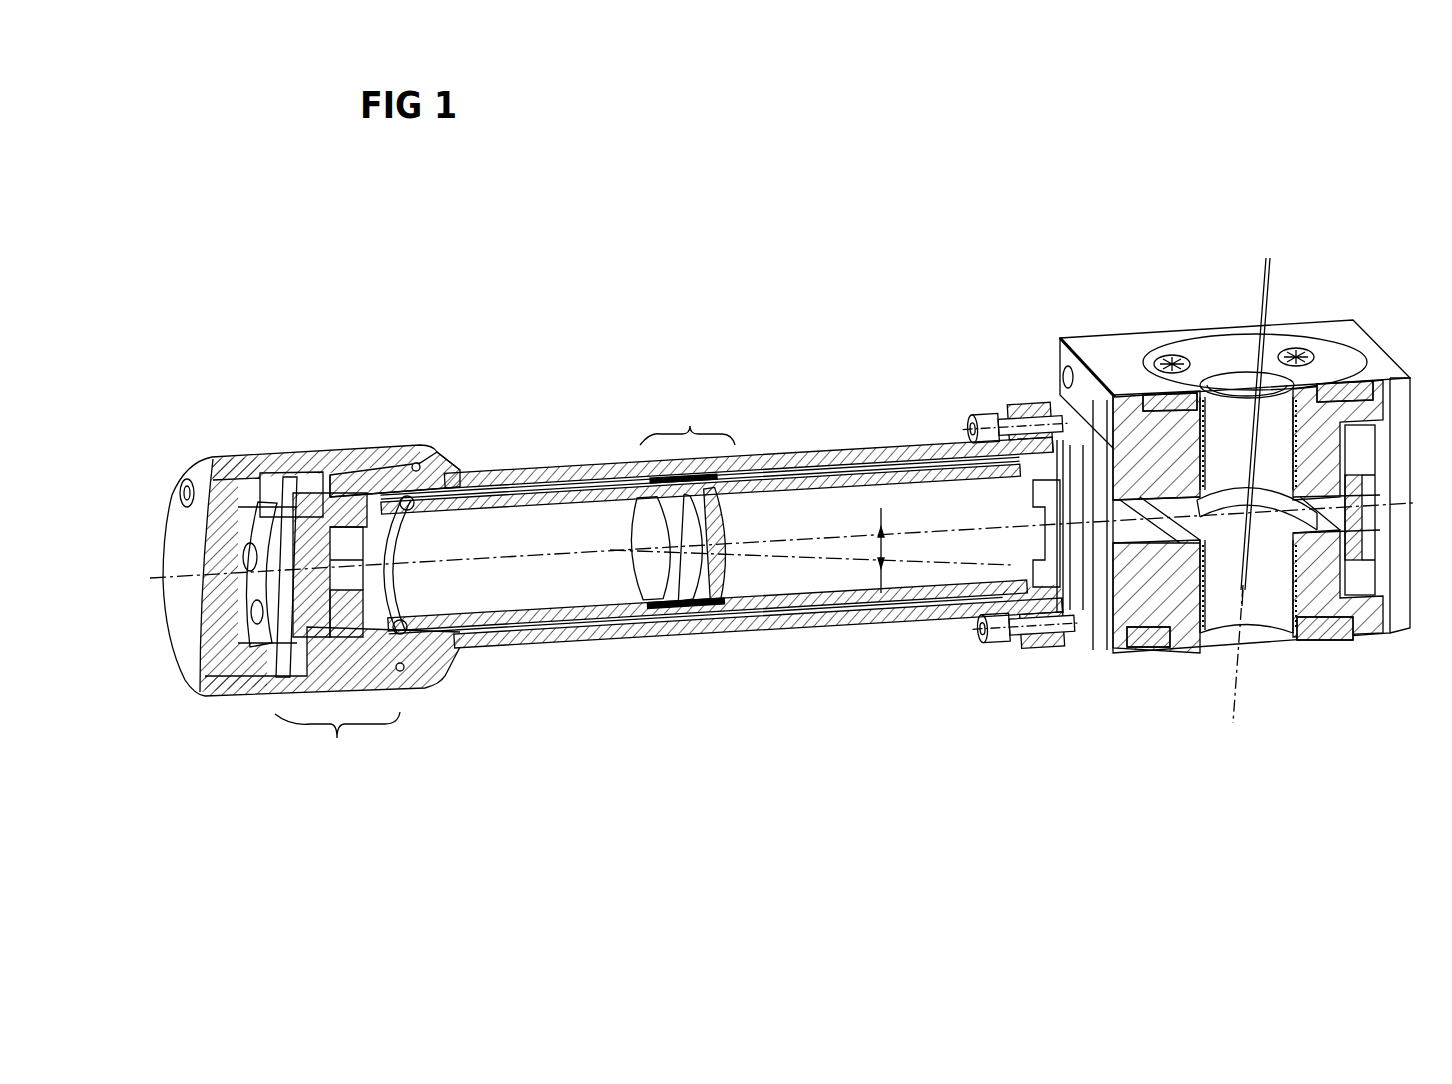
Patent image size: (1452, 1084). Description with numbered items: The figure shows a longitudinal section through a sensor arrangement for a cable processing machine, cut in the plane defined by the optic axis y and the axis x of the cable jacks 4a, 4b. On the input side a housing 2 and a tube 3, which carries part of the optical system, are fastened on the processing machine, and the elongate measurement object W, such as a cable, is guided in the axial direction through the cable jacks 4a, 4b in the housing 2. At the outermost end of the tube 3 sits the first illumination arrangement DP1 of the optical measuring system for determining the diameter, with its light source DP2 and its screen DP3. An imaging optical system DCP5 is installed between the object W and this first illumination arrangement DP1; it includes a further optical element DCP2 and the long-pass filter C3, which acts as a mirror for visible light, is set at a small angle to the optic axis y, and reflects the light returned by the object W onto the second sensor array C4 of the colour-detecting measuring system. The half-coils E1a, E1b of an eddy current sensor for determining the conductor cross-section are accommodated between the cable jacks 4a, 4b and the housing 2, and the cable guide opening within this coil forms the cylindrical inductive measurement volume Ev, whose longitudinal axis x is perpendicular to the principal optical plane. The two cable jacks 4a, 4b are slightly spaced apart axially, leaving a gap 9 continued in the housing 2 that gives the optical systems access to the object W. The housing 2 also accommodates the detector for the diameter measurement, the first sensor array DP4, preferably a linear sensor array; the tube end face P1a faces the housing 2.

The first illumination arrangement DP1 is at (311, 618).
The light source DP2 is at (300, 520).
The screen DP3 is at (410, 465).
The tube 3 is at (520, 637).
The imaging optical system DCP5 is at (620, 583).
The long-pass filter C3 is at (658, 583).
The lens element DCP2 is at (690, 587).
The optic axis Y is at (858, 540).
The tube end face P1a is at (960, 440).
The gap 9 is at (967, 440).
The second sensor array C4 is at (1032, 605).
The housing 2 is at (1037, 400).
The half-coil E1a is at (1102, 348).
The half-coil E1b is at (1330, 637).
The cable jack 4a is at (1173, 397).
The cable jack 4b is at (1282, 637).
The inductive measurement volume Ev is at (1267, 607).
The measurement object W is at (1240, 403).
The axis of the cable jacks X is at (1237, 688).
The first sensor array DP4 is at (1362, 440).